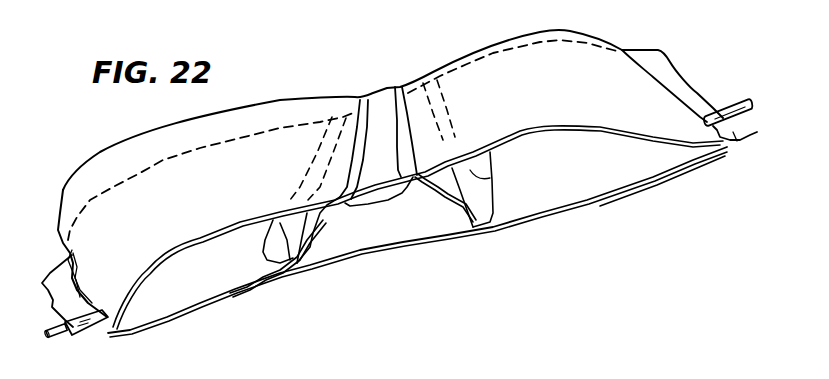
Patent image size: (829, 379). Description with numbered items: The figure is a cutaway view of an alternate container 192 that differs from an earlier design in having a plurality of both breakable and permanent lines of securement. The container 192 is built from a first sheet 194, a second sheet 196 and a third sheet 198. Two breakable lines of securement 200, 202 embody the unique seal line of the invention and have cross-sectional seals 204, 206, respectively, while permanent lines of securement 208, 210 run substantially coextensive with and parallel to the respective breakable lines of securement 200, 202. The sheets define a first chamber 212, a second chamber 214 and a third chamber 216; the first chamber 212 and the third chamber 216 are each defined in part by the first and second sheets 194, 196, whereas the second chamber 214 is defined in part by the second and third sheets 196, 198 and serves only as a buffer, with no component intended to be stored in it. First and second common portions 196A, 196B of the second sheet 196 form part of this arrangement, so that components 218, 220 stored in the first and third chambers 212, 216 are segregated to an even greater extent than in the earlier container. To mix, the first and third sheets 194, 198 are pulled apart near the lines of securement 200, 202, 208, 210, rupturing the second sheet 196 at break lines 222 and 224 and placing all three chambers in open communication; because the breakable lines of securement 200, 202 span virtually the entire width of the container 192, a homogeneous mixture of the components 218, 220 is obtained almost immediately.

The container 192 is at (379, 50).
The first sheet 194 is at (107, 172).
The second sheet 196 is at (166, 312).
The first common portion 196A is at (452, 233).
The second common portion 196B is at (317, 250).
The third sheet 198 is at (175, 310).
The breakable line of securement 200 is at (360, 98).
The breakable line of securement 202 is at (398, 87).
The cross-sectional seal 204 is at (350, 206).
The cross-sectional seal 206 is at (410, 178).
The permanent line of securement 208 is at (273, 240).
The permanent line of securement 210 is at (483, 198).
The first chamber 212 is at (614, 182).
The second chamber 214 is at (403, 232).
The third chamber 216 is at (258, 297).
The component 218 is at (600, 171).
The component 220 is at (213, 273).
The break line 222 is at (462, 167).
The break line 224 is at (352, 244).